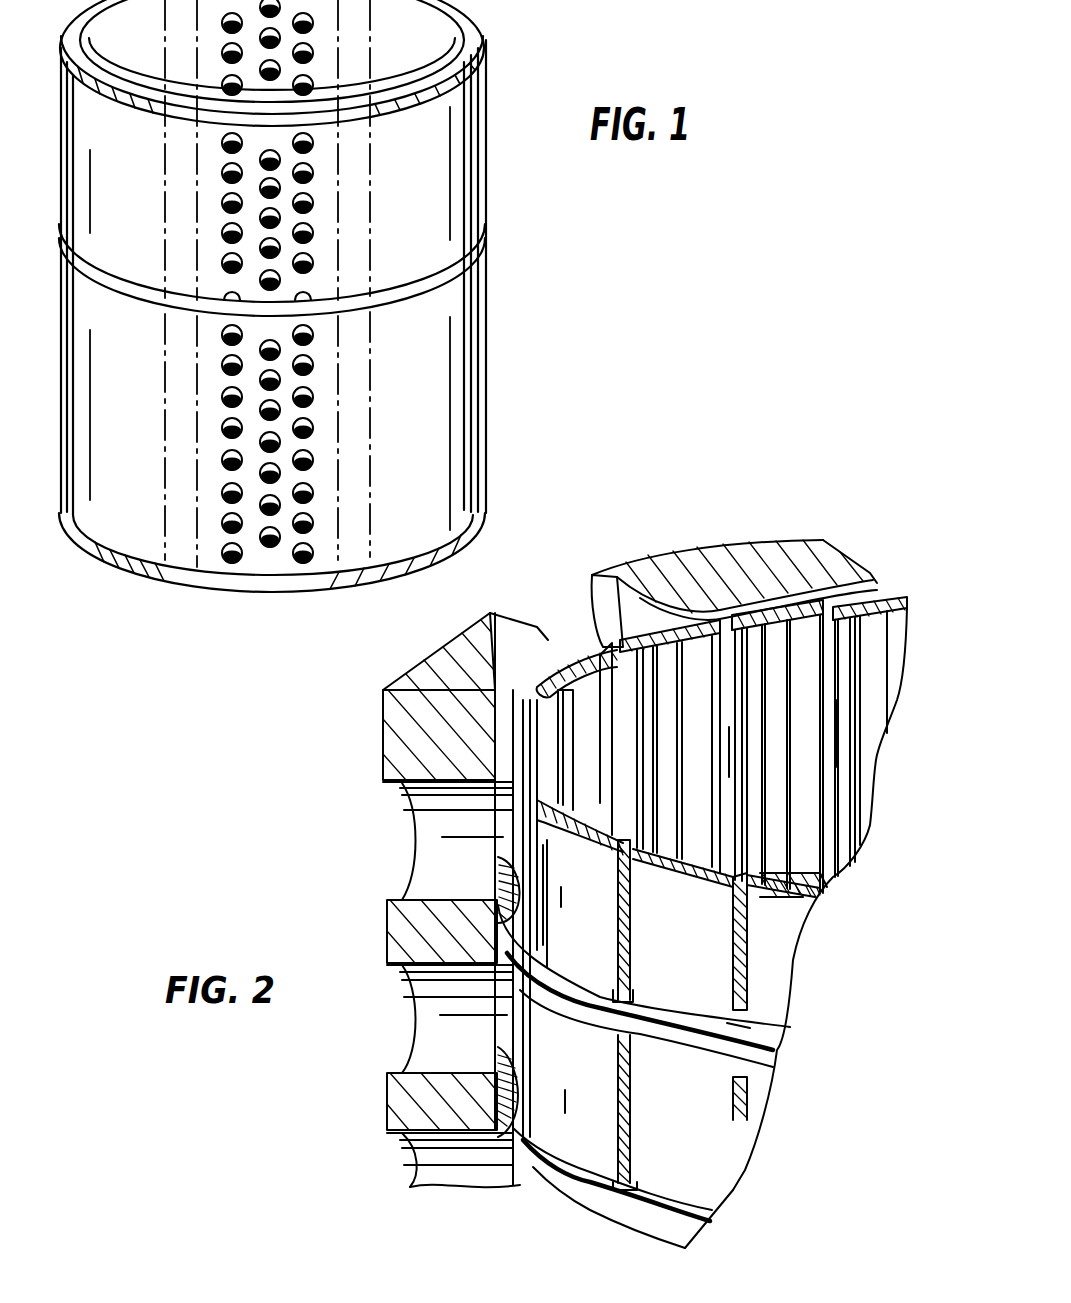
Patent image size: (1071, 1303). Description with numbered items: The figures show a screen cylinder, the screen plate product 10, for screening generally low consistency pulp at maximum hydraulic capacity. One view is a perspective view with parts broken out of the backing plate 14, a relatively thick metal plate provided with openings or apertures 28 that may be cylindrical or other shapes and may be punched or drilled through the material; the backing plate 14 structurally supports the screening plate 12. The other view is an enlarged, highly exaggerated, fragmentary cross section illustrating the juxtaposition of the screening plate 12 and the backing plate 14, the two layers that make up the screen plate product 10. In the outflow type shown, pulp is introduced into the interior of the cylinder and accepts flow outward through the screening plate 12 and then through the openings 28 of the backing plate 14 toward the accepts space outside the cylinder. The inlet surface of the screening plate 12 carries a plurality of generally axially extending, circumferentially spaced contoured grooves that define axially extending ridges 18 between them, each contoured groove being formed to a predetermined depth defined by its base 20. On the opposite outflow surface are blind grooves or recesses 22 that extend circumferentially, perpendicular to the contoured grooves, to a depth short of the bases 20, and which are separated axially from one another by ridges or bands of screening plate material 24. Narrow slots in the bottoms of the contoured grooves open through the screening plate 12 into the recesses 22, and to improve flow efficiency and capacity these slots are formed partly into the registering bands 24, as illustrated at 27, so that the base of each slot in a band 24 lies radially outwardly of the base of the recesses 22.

The screen plate product 10 is at (315, 795).
The screening plate 12 is at (803, 640).
The backing plate 14 is at (723, 545).
The ridges 18 is at (587, 637).
The bases of grooves 20 is at (603, 647).
The grooves or recesses 22 is at (507, 1018).
The bands of screening plate material 24 is at (575, 1198).
The slot extension into band 27 is at (610, 957).
The openings or apertures 28 is at (437, 857).